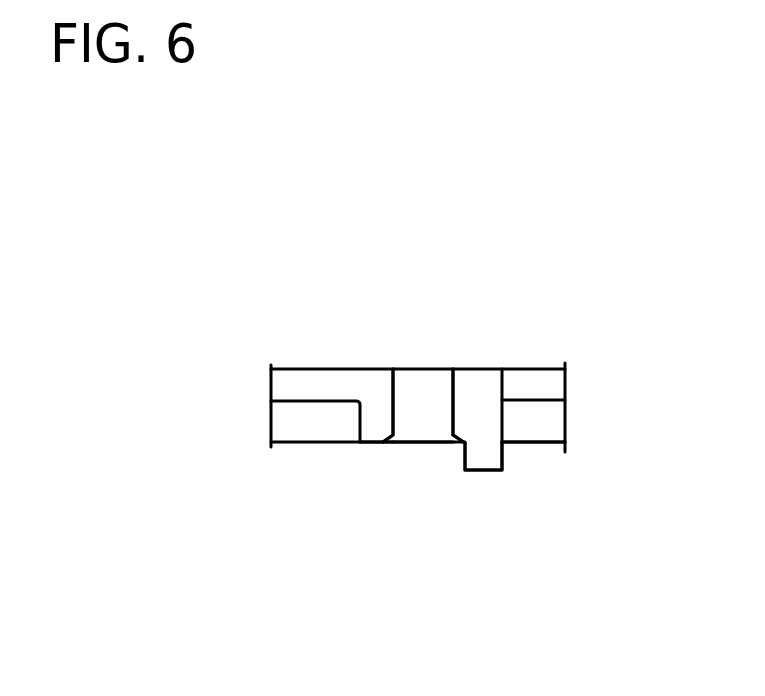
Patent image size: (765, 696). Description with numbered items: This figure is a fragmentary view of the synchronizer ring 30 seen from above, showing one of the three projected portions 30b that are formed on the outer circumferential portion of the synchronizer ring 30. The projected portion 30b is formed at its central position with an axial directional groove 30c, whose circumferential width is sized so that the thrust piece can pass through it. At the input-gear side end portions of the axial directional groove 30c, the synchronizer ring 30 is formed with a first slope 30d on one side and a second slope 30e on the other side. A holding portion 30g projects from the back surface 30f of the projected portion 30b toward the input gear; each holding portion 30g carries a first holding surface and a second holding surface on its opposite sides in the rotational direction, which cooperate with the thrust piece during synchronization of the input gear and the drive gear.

The synchronizer ring 30 is at (307, 382).
The projected portions 30b is at (492, 425).
The axial directional groove 30c is at (422, 418).
The first slope 30d is at (452, 447).
The second slope 30e is at (390, 445).
The back surfaces 30f is at (528, 443).
The holding portions 30g is at (493, 459).